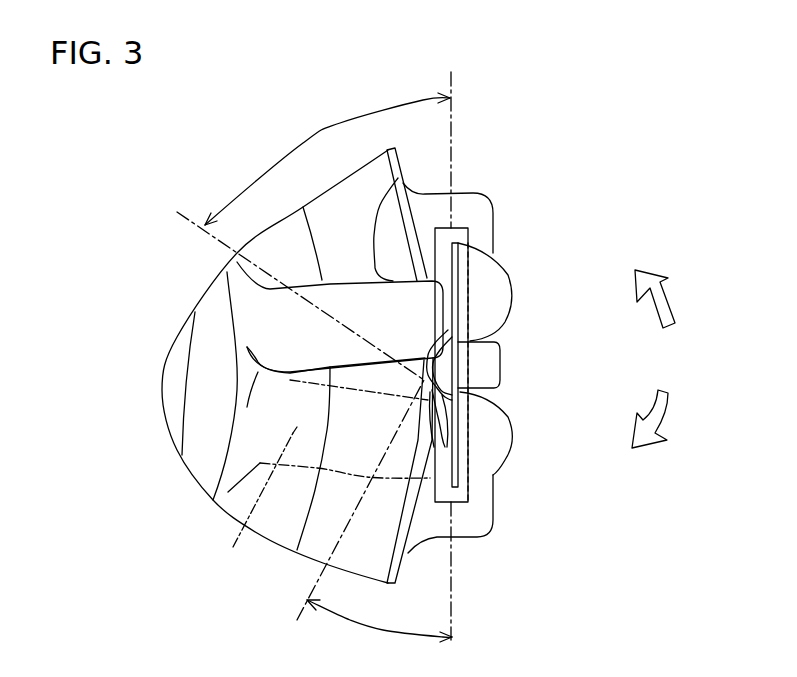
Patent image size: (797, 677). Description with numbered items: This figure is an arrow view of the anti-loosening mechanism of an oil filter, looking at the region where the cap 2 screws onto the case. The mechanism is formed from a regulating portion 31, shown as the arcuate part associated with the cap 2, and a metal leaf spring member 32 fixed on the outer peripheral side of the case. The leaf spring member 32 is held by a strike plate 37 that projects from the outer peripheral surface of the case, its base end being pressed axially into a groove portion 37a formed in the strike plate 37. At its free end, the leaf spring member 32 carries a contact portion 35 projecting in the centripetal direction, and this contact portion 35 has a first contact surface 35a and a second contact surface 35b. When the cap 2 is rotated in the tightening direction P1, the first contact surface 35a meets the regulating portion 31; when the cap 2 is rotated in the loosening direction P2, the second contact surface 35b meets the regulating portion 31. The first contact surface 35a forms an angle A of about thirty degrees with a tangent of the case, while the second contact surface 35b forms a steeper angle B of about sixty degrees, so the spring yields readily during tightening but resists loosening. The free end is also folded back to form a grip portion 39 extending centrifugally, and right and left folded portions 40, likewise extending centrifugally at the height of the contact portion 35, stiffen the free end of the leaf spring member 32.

The cap 2 is at (208, 317).
The regulating portion 31 is at (407, 177).
The leaf spring member 32 is at (513, 368).
The contact portion 35 is at (460, 374).
The first contact surface 35a is at (435, 347).
The second contact surface 35b is at (445, 375).
The strike plate 37 is at (468, 217).
The groove portion 37a is at (470, 250).
The grip portion 39 is at (483, 353).
The folded portions 40 is at (490, 297).
The angle A is at (360, 630).
The angle B is at (290, 147).
The tightening direction P1 is at (663, 425).
The loosening direction P2 is at (668, 297).